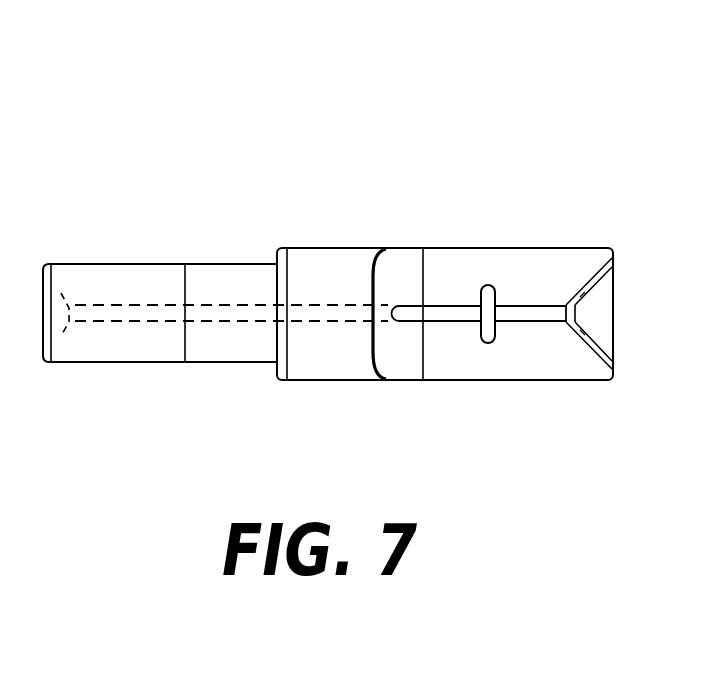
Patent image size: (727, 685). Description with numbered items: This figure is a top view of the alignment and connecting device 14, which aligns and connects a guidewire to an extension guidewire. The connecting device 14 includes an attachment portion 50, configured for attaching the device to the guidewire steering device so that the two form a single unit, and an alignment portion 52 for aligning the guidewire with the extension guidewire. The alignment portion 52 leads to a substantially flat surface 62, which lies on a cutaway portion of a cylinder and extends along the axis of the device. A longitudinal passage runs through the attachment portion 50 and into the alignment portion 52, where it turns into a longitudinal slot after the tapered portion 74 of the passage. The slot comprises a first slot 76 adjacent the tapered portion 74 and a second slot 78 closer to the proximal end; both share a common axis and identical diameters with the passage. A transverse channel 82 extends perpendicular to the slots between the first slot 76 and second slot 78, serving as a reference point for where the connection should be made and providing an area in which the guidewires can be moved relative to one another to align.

The alignment and connecting device 14 is at (324, 98).
The attachment portion 50 is at (180, 254).
The alignment portion 52 is at (481, 240).
The substantially flat surface 62 is at (537, 268).
The tapered portion of the passage 74 is at (403, 320).
The first slot 76 is at (441, 314).
The second slot 78 is at (530, 315).
The transverse channel 82 is at (493, 342).